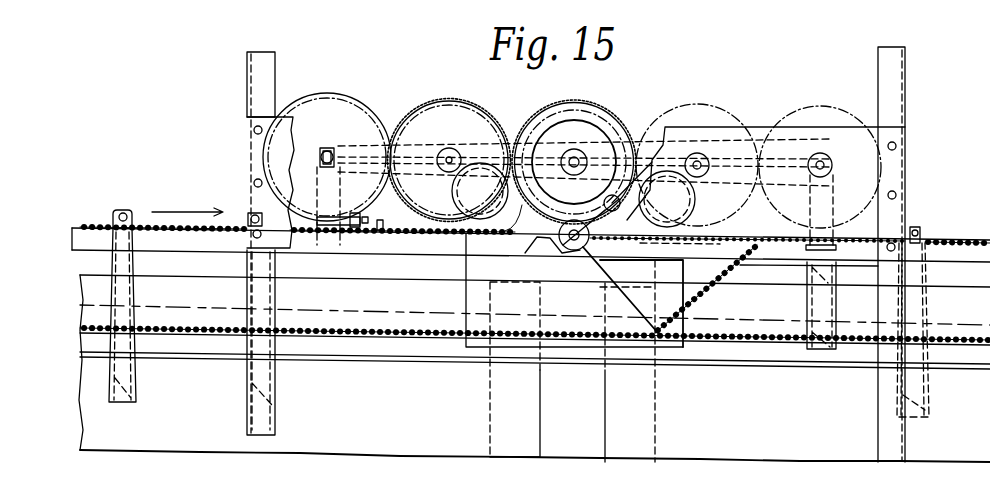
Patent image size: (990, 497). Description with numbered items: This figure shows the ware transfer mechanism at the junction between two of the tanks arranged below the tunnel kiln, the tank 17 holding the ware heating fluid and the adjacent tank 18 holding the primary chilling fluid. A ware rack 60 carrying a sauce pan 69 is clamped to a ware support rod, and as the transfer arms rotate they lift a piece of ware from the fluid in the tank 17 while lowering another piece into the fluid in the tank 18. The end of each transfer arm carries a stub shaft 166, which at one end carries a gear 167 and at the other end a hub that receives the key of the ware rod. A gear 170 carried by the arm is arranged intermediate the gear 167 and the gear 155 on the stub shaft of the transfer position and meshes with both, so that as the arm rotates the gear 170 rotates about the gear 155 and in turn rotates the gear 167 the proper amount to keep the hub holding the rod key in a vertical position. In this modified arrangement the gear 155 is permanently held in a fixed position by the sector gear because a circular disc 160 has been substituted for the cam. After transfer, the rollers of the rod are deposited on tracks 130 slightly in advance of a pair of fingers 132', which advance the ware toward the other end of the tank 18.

The tank 17 is at (535, 377).
The tank 18 is at (610, 412).
The ware rack 60 is at (104, 267).
The sauce pan 69 is at (123, 370).
The tracks 130 is at (939, 242).
The fingers 132' is at (720, 282).
The gear 155 is at (577, 106).
The circular disc 160 is at (588, 143).
The stub shaft 166 is at (333, 153).
The gear 167 is at (325, 98).
The gear 170 is at (432, 104).